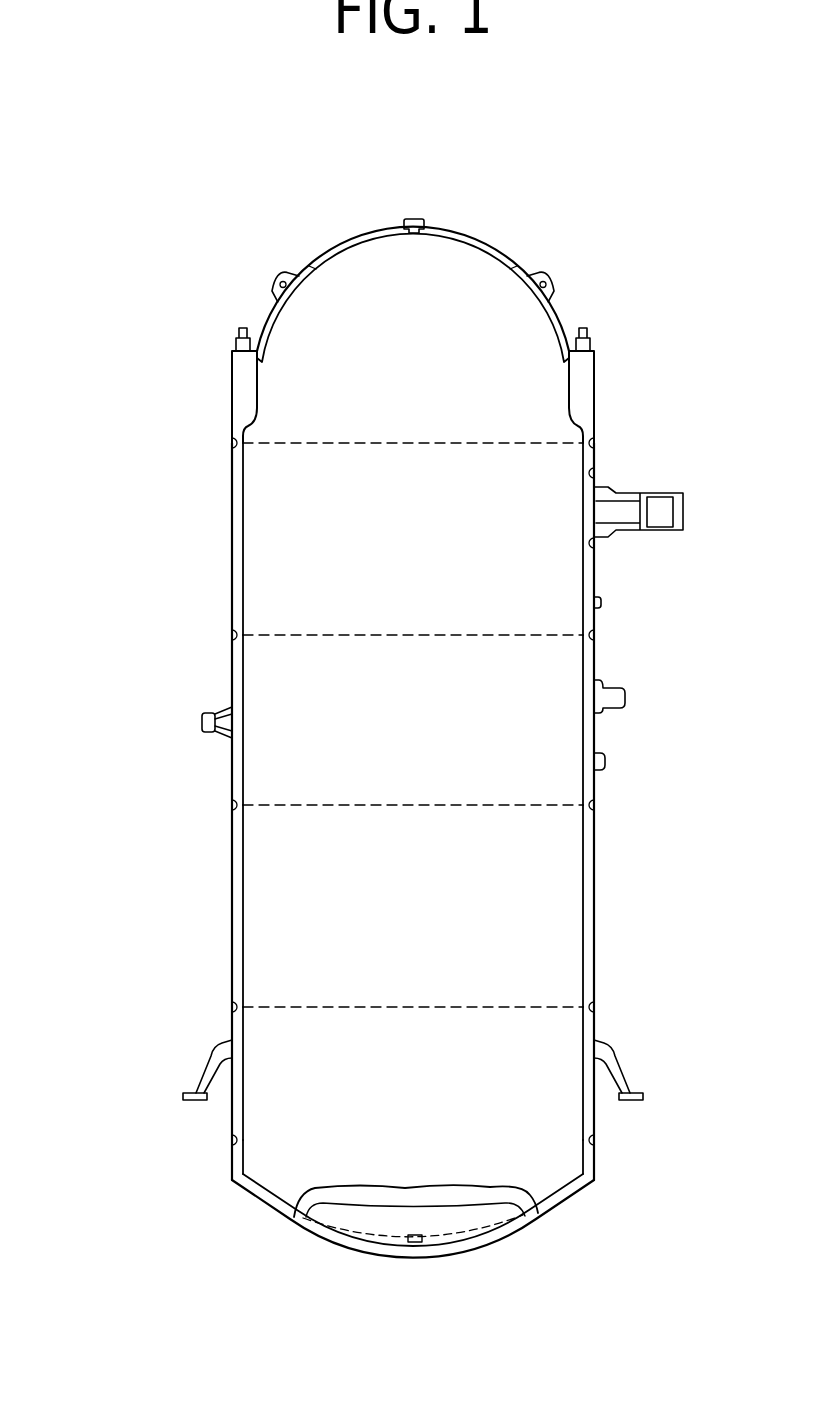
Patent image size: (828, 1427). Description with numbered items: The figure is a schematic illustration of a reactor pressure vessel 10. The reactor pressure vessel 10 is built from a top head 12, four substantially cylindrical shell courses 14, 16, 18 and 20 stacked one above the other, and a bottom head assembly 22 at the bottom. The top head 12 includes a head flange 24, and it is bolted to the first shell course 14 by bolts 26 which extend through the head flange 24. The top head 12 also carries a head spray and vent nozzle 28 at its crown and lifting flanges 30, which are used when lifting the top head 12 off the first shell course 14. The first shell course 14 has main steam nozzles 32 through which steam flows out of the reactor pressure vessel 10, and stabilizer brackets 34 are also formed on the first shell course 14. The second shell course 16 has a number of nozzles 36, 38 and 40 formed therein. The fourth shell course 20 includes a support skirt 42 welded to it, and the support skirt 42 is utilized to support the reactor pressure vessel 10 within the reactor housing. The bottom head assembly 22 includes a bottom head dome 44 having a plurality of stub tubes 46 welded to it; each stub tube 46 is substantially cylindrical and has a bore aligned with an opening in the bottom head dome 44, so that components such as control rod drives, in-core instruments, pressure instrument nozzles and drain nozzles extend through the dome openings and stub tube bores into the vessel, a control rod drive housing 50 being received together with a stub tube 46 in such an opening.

The reactor pressure vessel 10 is at (118, 291).
The top head 12 is at (486, 243).
The first shell course 14 is at (598, 562).
The second shell course 16 is at (598, 729).
The third shell course 18 is at (598, 905).
The fourth shell course 20 is at (602, 1122).
The bottom head assembly 22 is at (503, 1243).
The head flange 24 is at (232, 387).
The bolts 26 is at (232, 340).
The head spray and vent nozzle 28 is at (413, 217).
The lifting flanges 30 is at (273, 292).
The main steam nozzles 32 is at (626, 490).
The stabilizer brackets 34 is at (602, 603).
The nozzle 36 is at (614, 690).
The nozzle 38 is at (603, 762).
The nozzle 40 is at (211, 711).
The support skirt 42 is at (627, 1072).
The bottom head dome 44 is at (383, 1248).
The stub tubes 46 is at (417, 1233).
The control rod drive housing 50 is at (604, 1164).